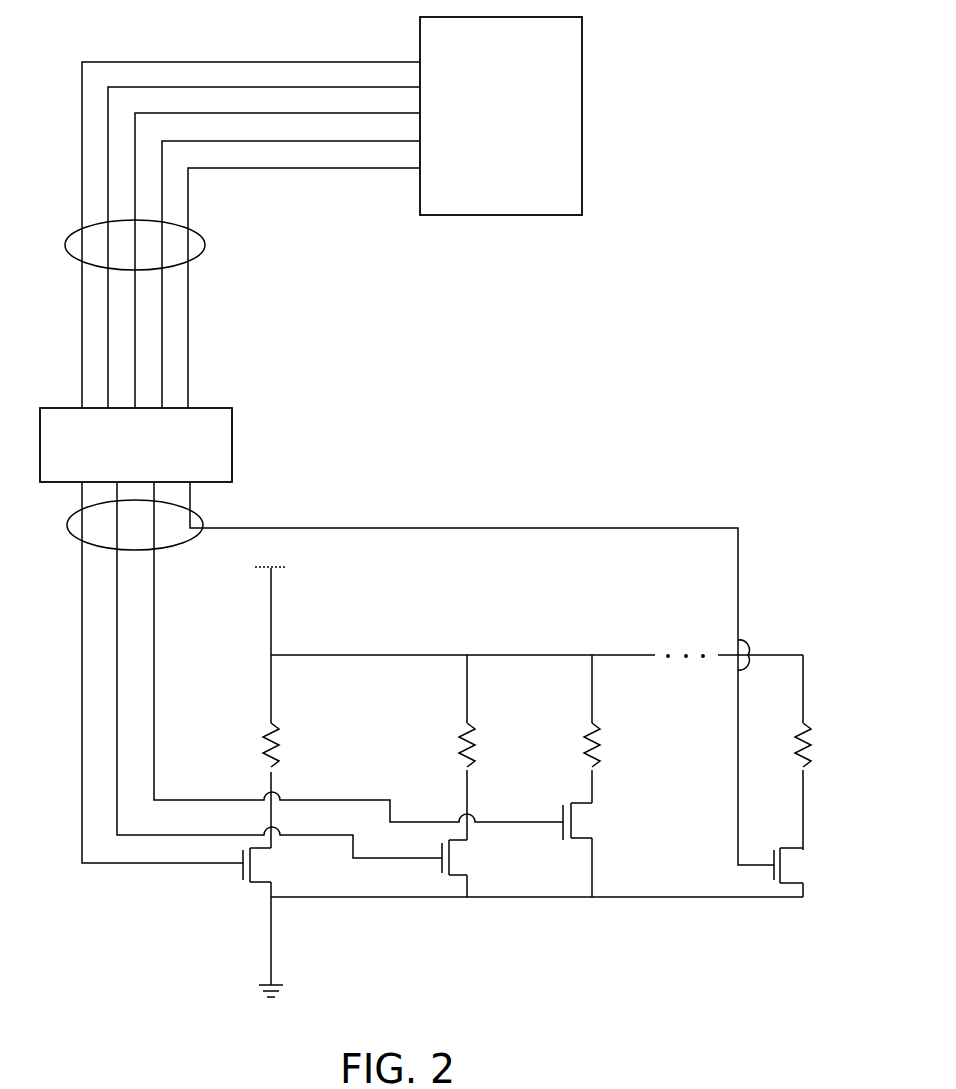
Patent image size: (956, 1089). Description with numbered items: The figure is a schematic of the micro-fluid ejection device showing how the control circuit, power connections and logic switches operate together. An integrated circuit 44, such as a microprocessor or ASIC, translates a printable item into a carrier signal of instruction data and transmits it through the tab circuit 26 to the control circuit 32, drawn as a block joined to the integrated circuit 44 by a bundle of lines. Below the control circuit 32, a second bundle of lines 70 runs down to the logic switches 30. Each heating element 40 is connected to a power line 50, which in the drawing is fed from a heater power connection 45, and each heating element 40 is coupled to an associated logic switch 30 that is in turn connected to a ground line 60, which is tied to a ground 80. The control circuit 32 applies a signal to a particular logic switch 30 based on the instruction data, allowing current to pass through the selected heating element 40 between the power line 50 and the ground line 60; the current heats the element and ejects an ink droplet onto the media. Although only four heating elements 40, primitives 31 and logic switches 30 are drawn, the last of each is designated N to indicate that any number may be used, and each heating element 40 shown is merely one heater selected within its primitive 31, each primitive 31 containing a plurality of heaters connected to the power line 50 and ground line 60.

The tab circuit 26 is at (203, 243).
The integrated circuit 44 is at (503, 215).
The control circuit 32 is at (234, 437).
The control lines 70 is at (67, 525).
The heater power supply line 45 is at (302, 552).
The primitive 31 is at (202, 625).
The power line 50 is at (372, 653).
The heating element 40 is at (262, 740).
The logic switch 30 is at (262, 866).
The ground line 60 is at (444, 898).
The ground 80 is at (280, 980).